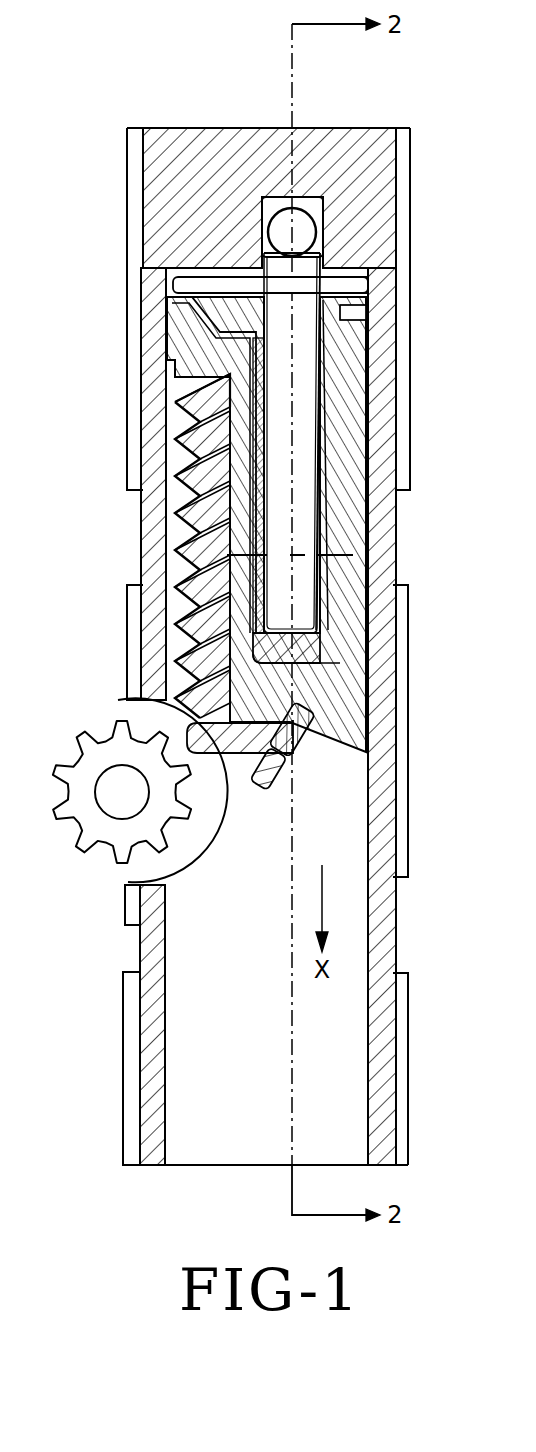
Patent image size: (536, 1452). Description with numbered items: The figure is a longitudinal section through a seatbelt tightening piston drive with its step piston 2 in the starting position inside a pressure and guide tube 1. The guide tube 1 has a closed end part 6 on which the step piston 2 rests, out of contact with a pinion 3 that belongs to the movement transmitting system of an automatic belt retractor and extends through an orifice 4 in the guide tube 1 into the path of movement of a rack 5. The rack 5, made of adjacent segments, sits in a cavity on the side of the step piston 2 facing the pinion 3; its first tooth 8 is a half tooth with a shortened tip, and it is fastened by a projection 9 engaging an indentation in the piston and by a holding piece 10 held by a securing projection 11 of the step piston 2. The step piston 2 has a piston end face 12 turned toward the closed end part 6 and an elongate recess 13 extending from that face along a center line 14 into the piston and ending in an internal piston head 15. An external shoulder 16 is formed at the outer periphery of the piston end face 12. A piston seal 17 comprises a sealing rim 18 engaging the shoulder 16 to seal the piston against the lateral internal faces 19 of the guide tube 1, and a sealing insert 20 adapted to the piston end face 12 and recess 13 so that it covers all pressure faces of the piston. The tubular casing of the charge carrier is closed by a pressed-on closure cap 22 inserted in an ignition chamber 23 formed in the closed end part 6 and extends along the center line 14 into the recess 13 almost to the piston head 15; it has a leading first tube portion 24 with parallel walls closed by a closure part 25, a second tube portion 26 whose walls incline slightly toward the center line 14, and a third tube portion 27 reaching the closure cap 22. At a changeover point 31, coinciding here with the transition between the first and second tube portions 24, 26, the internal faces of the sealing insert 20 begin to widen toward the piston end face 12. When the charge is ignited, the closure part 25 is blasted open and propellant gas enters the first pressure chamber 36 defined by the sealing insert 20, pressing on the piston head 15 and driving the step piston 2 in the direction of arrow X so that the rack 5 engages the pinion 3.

The pressure and guide tube 1 is at (140, 378).
The step piston 2 is at (192, 350).
The pinion 3 is at (93, 840).
The orifice 4 is at (148, 868).
The rack 5 is at (190, 580).
The closed end part 6 is at (204, 163).
The first tooth 8 is at (197, 738).
The projection 9 is at (213, 398).
The holding piece 10 is at (287, 735).
The securing projection 11 is at (275, 786).
The piston end face 12 is at (352, 272).
The recess 13 is at (342, 432).
The center line 14 is at (292, 372).
The internal piston head 15 is at (298, 665).
The external shoulder 16 is at (356, 312).
The piston seal 17 is at (237, 322).
The sealing rim 18 is at (172, 298).
The lateral internal faces 19 is at (168, 1000).
The sealing insert 20 is at (253, 417).
The closure cap 22 is at (323, 213).
The ignition chamber 23 is at (308, 200).
The first tube portion 24 is at (310, 600).
The closure part 25 is at (308, 630).
The second tube portion 26 is at (324, 470).
The third tube portion 27 is at (322, 385).
The changeover point 31 is at (300, 552).
The first pressure chamber 36 is at (353, 680).